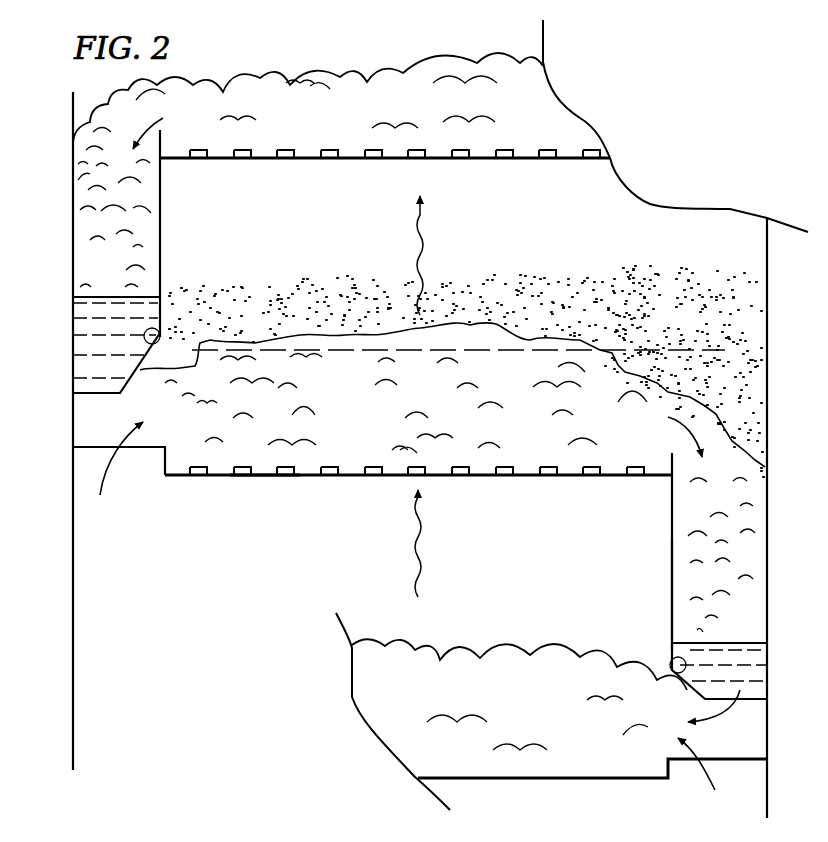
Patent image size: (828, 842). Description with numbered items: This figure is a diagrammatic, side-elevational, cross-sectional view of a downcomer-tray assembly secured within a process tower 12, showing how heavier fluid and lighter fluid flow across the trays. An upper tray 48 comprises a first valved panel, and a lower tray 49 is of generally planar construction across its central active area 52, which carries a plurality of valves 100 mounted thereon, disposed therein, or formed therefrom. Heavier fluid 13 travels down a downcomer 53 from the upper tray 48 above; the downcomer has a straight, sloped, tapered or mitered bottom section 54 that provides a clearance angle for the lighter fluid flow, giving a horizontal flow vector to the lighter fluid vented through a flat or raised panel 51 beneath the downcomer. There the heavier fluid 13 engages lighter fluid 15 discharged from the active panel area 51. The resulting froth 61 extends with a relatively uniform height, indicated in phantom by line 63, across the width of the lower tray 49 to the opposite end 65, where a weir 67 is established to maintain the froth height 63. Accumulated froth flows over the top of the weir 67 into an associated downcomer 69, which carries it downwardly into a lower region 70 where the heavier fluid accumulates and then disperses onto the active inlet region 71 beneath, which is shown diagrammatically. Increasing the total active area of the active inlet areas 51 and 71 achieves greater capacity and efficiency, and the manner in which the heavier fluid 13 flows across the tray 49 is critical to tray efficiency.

The housing wall 12 is at (767, 297).
The heavier fluid 13 is at (112, 310).
The lighter fluid 15 is at (420, 213).
The upper tray 48 is at (524, 158).
The lower tray 49 is at (170, 478).
The flat or raised panel 51 is at (73, 447).
The central active area 52 is at (263, 481).
The downcomer 53 is at (163, 143).
The tapered bottom section 54 is at (160, 328).
The froth 61 is at (258, 77).
The froth height line 63 is at (318, 330).
The opposite end 65 is at (527, 470).
The weir 67 is at (672, 458).
The associated downcomer 69 is at (672, 578).
The lower region 70 is at (672, 658).
The active inlet region 71 is at (722, 759).
The valves 100 is at (330, 150).